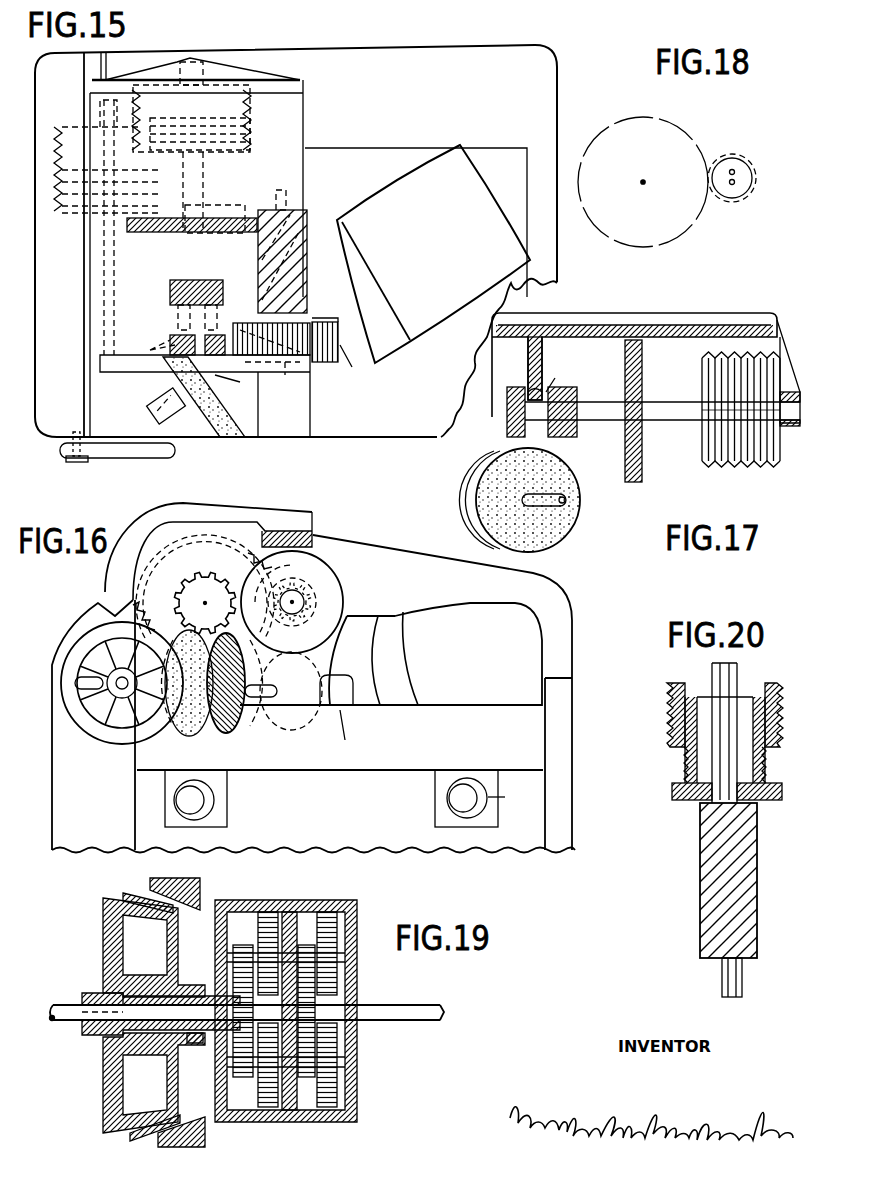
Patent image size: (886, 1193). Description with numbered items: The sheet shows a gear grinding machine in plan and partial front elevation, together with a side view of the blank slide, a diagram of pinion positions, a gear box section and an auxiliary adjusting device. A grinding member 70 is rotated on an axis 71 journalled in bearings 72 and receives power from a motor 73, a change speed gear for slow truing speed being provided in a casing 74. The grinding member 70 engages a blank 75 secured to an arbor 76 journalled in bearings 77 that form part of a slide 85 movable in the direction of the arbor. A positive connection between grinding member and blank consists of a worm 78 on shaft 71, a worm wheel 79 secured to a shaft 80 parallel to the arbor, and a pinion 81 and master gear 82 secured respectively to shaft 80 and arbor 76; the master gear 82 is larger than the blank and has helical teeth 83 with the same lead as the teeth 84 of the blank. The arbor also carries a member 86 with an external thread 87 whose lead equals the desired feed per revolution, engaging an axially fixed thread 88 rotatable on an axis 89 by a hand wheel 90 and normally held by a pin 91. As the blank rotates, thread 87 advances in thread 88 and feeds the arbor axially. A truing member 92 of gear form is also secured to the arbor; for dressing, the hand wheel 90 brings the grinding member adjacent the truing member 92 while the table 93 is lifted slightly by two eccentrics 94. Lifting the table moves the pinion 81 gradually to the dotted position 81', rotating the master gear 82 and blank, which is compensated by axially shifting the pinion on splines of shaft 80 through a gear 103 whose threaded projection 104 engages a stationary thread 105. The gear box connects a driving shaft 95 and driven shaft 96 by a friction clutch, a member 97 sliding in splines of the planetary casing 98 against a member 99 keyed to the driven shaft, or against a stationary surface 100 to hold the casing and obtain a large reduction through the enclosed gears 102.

In FIG. 15, the grinding member 70 is at (238, 437).
In FIG. 17, the grinding member 70 is at (472, 484).
In FIG. 16, the grinding member 70 is at (165, 735).
In FIG. 15, the axis 71 is at (225, 378).
In FIG. 17, the axis 71 is at (565, 502).
In FIG. 16, the axis 71 is at (258, 705).
In FIG. 15, the bearings 72 is at (180, 418).
In FIG. 16, the bearings 72 is at (190, 740).
In FIG. 15, the motor 73 is at (437, 310).
In FIG. 16, the motor 73 is at (420, 630).
In FIG. 15, the casing 74 is at (400, 335).
In FIG. 16, the casing 74 is at (378, 630).
In FIG. 15, the blank 75 is at (195, 345).
In FIG. 17, the blank 75 is at (507, 425).
In FIG. 16, the blank 75 is at (222, 575).
In FIG. 15, the arbor 76 is at (195, 179).
In FIG. 17, the arbor 76 is at (685, 416).
In FIG. 15, the bearings 77 is at (190, 62).
In FIG. 17, the bearings 77 is at (790, 426).
In FIG. 15, the worm 78 is at (285, 375).
In FIG. 16, the worm 78 is at (295, 718).
In FIG. 15, the worm wheel 79 is at (320, 362).
In FIG. 16, the worm wheel 79 is at (330, 585).
In FIG. 15, the shaft 80 is at (280, 205).
In FIG. 20, the shaft 80 is at (722, 978).
In FIG. 15, the pinion 81 is at (300, 255).
In FIG. 18, the pinion 81 is at (749, 188).
In FIG. 16, the pinion 81 is at (315, 569).
In FIG. 20, the pinion 81 is at (711, 880).
In FIG. 18, the position of pinion 81' is at (749, 166).
In FIG. 15, the master gear 82 is at (190, 232).
In FIG. 17, the master gear 82 is at (642, 475).
In FIG. 18, the master gear 82 is at (667, 135).
In FIG. 16, the master gear 82 is at (195, 540).
In FIG. 15, the helical teeth 83 is at (215, 233).
In FIG. 15, the teeth 84 is at (170, 342).
In FIG. 17, the slide 85 is at (680, 318).
In FIG. 16, the slide 85 is at (120, 556).
In FIG. 15, the member 86 is at (248, 128).
In FIG. 17, the member 86 is at (755, 462).
In FIG. 15, the external thread 87 is at (250, 104).
In FIG. 17, the external thread 87 is at (715, 465).
In FIG. 15, the external thread 88 is at (75, 140).
In FIG. 15, the axis 89 is at (100, 245).
In FIG. 15, the hand wheel 90 is at (135, 458).
In FIG. 16, the hand wheel 90 is at (80, 708).
In FIG. 15, the pin 91 is at (73, 462).
In FIG. 16, the pin 91 is at (75, 682).
In FIG. 15, the truing member 92 is at (170, 292).
In FIG. 17, the truing member 92 is at (577, 435).
In FIG. 16, the table 93 is at (375, 765).
In FIG. 16, the eccentrics 94 is at (216, 800).
In FIG. 19, the driving shaft 95 is at (415, 1010).
In FIG. 19, the driven shaft 96 is at (70, 1020).
In FIG. 19, the member 97 is at (190, 1045).
In FIG. 19, the planetary casing 98 is at (290, 912).
In FIG. 19, the member 99 is at (103, 904).
In FIG. 19, the stationary surface 100 is at (205, 1140).
In FIG. 19, the gears 102 is at (335, 1110).
In FIG. 20, the gear 103 is at (676, 800).
In FIG. 20, the threaded projection 104 is at (686, 766).
In FIG. 20, the stationary thread 105 is at (668, 708).